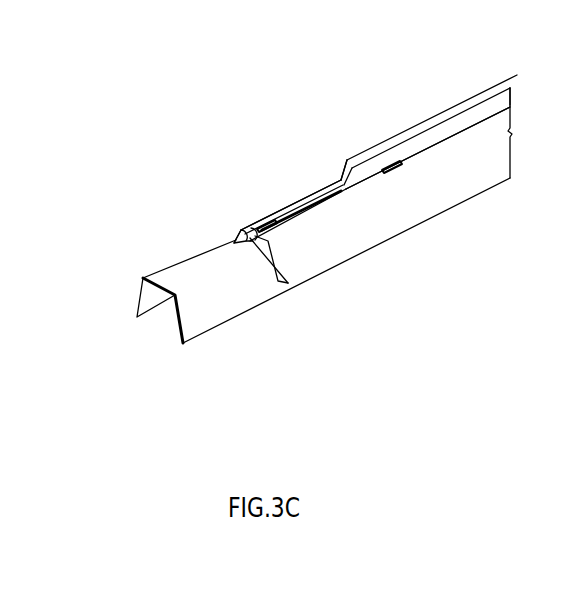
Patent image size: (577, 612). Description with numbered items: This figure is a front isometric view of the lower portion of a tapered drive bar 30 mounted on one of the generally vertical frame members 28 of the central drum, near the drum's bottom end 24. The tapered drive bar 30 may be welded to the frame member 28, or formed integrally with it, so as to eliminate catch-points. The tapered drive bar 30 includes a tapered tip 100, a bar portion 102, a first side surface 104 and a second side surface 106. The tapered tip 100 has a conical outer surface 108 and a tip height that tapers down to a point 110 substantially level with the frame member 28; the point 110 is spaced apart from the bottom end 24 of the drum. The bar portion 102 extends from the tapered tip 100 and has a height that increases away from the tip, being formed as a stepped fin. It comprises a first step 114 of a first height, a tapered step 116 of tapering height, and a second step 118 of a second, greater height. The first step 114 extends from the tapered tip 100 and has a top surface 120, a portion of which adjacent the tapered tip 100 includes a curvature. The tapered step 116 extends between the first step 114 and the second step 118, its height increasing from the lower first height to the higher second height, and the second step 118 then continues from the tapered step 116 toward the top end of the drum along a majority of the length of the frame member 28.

The bottom end 24 is at (200, 339).
The frame member 28 is at (533, 102).
The tapered drive bar 30 is at (432, 110).
The tapered tip 100 is at (180, 222).
The bar portion 102 is at (345, 215).
The first side surface 104 is at (252, 199).
The second side surface 106 is at (355, 214).
The conical outer surface 108 is at (318, 292).
The point 110 is at (266, 292).
The first step 114 is at (291, 177).
The tapered step 116 is at (413, 196).
The second step 118 is at (416, 138).
The top surface 120 is at (337, 249).